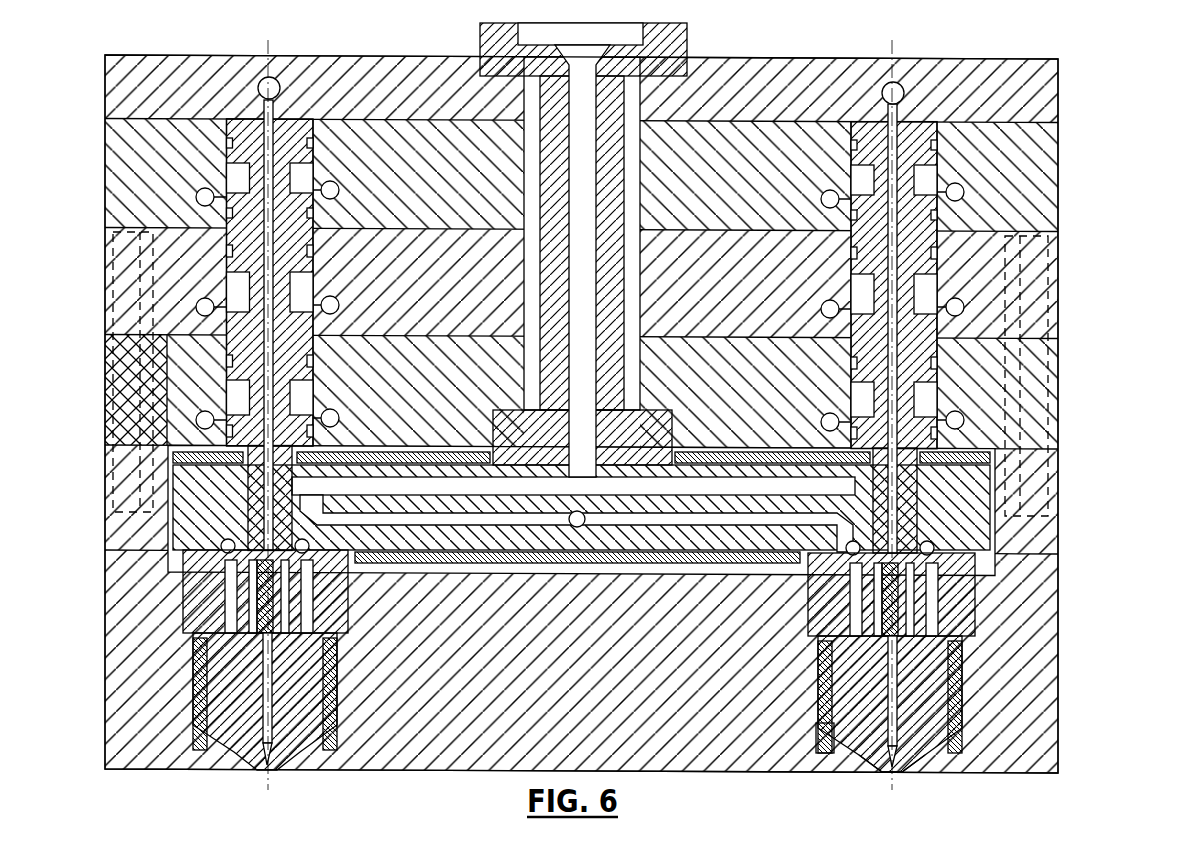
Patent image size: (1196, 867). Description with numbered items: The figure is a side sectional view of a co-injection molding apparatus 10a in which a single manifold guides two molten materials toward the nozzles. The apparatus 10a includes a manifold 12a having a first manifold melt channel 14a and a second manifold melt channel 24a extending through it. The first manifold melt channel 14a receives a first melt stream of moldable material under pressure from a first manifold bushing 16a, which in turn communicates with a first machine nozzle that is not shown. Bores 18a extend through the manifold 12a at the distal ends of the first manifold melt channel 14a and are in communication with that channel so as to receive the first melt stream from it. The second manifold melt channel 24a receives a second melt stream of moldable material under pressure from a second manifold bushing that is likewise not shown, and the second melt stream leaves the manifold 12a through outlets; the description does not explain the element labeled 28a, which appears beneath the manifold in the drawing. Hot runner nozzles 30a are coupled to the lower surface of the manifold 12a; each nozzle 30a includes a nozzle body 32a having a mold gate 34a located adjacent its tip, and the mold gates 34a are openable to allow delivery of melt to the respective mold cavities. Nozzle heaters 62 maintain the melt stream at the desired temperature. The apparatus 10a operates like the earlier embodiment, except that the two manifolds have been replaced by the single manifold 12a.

The co-injection molding apparatus 10a is at (1092, 226).
The manifold 12a is at (953, 503).
The first manifold melt channel 14a is at (967, 458).
The first manifold bushing 16a is at (610, 195).
The bores 18a is at (245, 508).
The second manifold melt channel 24a is at (840, 532).
The lower manifold heater 28a is at (792, 562).
The hot runner nozzles 30a is at (955, 603).
The nozzle body 32a is at (962, 662).
The mold gate 34a is at (893, 773).
The nozzle heaters 62 is at (818, 738).